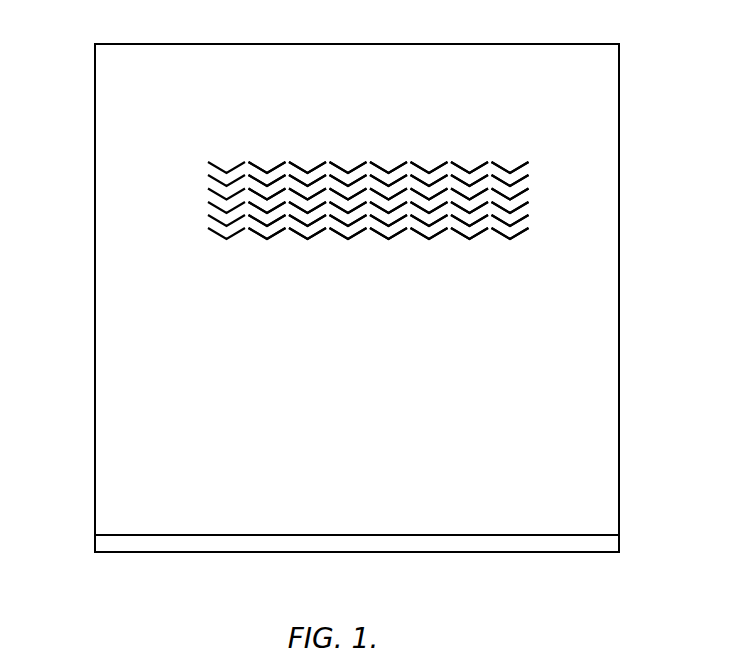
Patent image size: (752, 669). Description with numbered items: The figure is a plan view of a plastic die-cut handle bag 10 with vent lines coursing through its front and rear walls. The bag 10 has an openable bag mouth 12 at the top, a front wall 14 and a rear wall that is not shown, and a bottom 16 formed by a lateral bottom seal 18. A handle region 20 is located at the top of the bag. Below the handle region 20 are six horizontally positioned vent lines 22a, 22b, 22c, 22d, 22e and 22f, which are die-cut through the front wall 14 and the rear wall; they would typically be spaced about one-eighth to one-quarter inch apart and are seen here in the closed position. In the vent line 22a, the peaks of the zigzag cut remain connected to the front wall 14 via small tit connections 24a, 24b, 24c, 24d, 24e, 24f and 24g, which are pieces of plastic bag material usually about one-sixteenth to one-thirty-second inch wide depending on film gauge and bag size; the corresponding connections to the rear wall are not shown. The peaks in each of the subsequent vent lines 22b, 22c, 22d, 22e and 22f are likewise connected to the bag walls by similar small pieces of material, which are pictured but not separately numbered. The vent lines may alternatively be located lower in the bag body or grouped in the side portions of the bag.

The plastic bag 10 is at (361, 303).
The openable bag mouth 12 is at (435, 45).
The front wall 14 is at (185, 348).
The bottom 16 is at (313, 553).
The lateral bottom seal 18 is at (450, 536).
The handle region 20 is at (353, 147).
The vent line 22a is at (203, 162).
The vent line 22b is at (203, 175).
The vent line 22c is at (203, 188).
The vent line 22d is at (203, 202).
The vent line 22e is at (203, 215).
The vent line 22f is at (203, 228).
The tit connection 24a is at (248, 155).
The tit connection 24b is at (287, 155).
The tit connection 24c is at (325, 155).
The tit connection 24d is at (367, 155).
The tit connection 24e is at (407, 153).
The tit connection 24f is at (447, 155).
The tit connection 24g is at (490, 155).